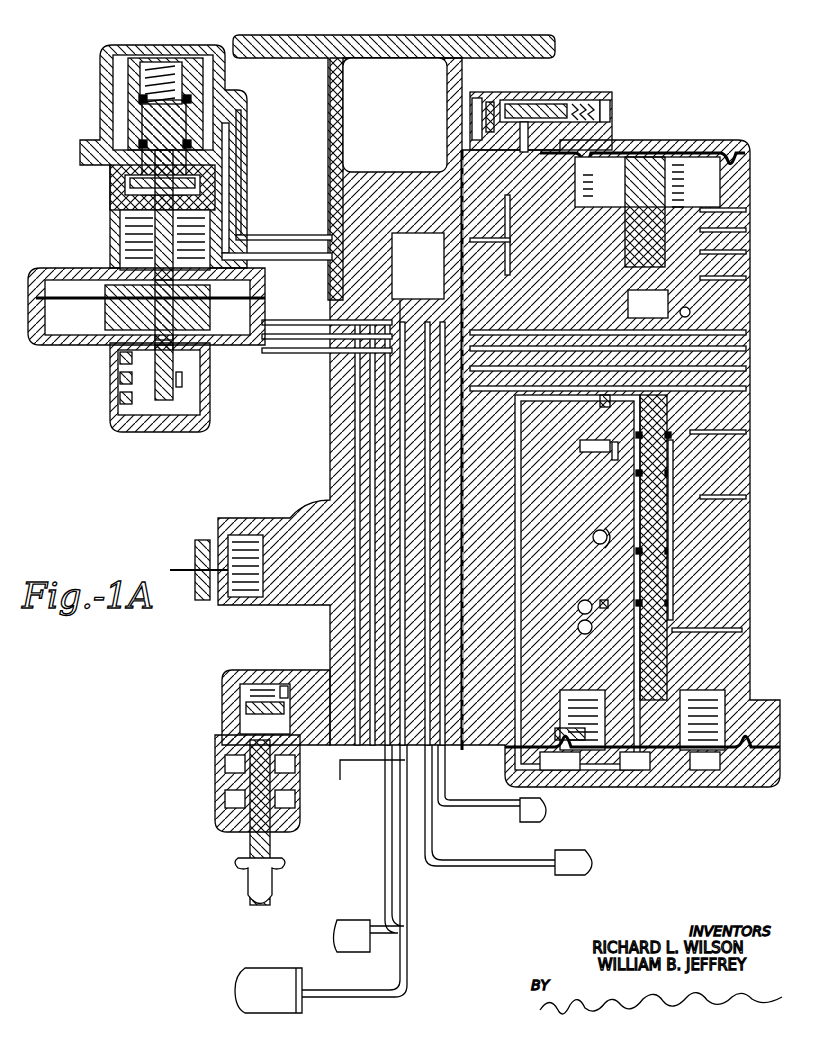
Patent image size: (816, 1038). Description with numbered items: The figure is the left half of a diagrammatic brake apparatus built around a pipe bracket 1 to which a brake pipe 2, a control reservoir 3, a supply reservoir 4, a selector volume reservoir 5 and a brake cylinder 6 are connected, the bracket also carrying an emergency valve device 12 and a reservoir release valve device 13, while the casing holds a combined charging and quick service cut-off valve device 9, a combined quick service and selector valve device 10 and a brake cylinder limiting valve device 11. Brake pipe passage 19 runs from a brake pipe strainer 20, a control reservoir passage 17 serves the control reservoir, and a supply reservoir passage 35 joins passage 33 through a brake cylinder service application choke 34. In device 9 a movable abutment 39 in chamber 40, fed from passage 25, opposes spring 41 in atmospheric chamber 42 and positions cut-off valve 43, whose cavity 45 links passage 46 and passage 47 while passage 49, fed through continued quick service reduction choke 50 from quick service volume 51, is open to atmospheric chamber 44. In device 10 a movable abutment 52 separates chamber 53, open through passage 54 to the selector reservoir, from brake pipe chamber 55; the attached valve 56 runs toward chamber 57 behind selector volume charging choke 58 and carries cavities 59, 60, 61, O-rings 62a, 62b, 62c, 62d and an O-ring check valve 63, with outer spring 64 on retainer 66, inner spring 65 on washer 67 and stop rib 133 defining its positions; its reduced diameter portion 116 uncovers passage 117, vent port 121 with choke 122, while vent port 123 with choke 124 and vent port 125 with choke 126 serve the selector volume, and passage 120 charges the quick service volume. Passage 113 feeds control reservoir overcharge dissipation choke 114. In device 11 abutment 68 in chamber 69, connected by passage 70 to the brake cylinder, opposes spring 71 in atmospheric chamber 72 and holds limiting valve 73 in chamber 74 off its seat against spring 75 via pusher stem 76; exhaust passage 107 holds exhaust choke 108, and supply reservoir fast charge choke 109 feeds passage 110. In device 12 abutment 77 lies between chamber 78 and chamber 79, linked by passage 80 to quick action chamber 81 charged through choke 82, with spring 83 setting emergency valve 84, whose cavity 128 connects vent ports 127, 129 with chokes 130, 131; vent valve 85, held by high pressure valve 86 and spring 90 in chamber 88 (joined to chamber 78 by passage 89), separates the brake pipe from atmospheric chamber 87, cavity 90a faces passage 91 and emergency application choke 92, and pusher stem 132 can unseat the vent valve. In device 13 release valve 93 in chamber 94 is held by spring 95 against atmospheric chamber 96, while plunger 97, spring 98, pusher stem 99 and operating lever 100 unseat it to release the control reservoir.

The pipe bracket 1 is at (330, 425).
The brake pipe 2 is at (192, 570).
The control reservoir 3 is at (570, 876).
The supply reservoir 4 is at (352, 922).
The selector volume reservoir 5 is at (528, 825).
The brake cylinder 6 is at (272, 968).
The combined charging and quick service cut-off valve device 9 is at (748, 150).
The combined quick service and selector valve device 10 is at (648, 778).
The brake cylinder limiting valve device 11 is at (598, 100).
The emergency valve device 12 is at (108, 45).
The reservoir release valve device 13 is at (222, 688).
The control reservoir passage 17 is at (758, 462).
The brake pipe passage 19 is at (400, 200).
The brake pipe strainer 20 is at (245, 537).
The passage 25 is at (746, 278).
The passage 33 is at (746, 368).
The brake cylinder service application choke 34 is at (466, 325).
The supply reservoir passage 35 is at (238, 195).
The movable abutment 39 is at (680, 165).
The chamber 40 is at (730, 150).
The helical bias spring 41 is at (632, 165).
The atmospheric chamber 42 is at (746, 188).
The charging and quick service cut-off valve 43 is at (632, 275).
The atmospheric chamber 44 is at (628, 308).
The elongated annular cavity 45 is at (628, 243).
The passage 46 is at (746, 230).
The passage 47 is at (746, 252).
The passage 49 is at (508, 300).
The continued quick service reduction choke 50 is at (470, 268).
The quick service volume 51 is at (418, 266).
The movable abutment 52 is at (680, 770).
The chamber 53 is at (735, 780).
The passage 54 is at (518, 548).
The chamber 55 is at (578, 711).
The combined quick service and selector valve 56 is at (668, 570).
The chamber 57 is at (665, 440).
The selector volume charging choke 58 is at (600, 402).
The elongated annular cavity 59 is at (668, 620).
The elongated annular cavity 60 is at (668, 590).
The elongated annular cavity 61 is at (668, 470).
The O-ring seal 62a is at (655, 440).
The O-ring seal 62b is at (636, 518).
The O-ring seal 62c is at (668, 562).
The O-ring seal 62d is at (740, 603).
The O-ring check valve 63 is at (668, 604).
The outer helical bias spring 64 is at (714, 711).
The inner helical bias spring 65 is at (620, 780).
The annular spring retainer 66 is at (715, 770).
The spring-retaining washer 67 is at (598, 708).
The movable abutment 68 is at (583, 100).
The chamber 69 is at (586, 104).
The brake cylinder passage 70 is at (385, 628).
The helical bias spring 71 is at (604, 104).
The atmospheric chamber 72 is at (590, 120).
The limiting valve 73 is at (525, 104).
The chamber 74 is at (492, 102).
The helical bias spring 75 is at (478, 98).
The pusher stem 76 is at (556, 104).
The movable abutment 77 is at (95, 310).
The chamber 78 is at (100, 270).
The chamber 79 is at (240, 315).
The passage 80 is at (215, 350).
The quick action chamber 81 is at (393, 60).
The quick action chamber charging choke 82 is at (45, 305).
The helical bias spring 83 is at (125, 220).
The emergency valve 84 is at (165, 415).
The brake pipe vent valve 85 is at (130, 196).
The high pressure valve 86 is at (140, 120).
The atmospheric chamber 87 is at (125, 165).
The chamber 88 is at (186, 70).
The passage 89 is at (226, 90).
The helical bias spring 90 is at (152, 68).
The elongated annular cavity 90a is at (140, 130).
The passage 91 is at (228, 125).
The brake cylinder emergency application choke 92 is at (412, 294).
The reservoir release valve 93 is at (246, 708).
The chamber 94 is at (250, 688).
The helical bias spring 95 is at (282, 686).
The atmospheric chamber 96 is at (232, 795).
The plunger 97 is at (235, 820).
The helical spring 98 is at (232, 760).
The pusher stem 99 is at (230, 745).
The operating lever 100 is at (252, 880).
The brake cylinder exhaust passage 107 is at (742, 432).
The brake cylinder exhaust choke 108 is at (462, 415).
The supply reservoir fast charge choke 109 is at (455, 190).
The passage 110 is at (755, 208).
The passage 113 is at (612, 462).
The control reservoir overcharge dissipation choke 114 is at (580, 445).
The reduced diameter portion 116 is at (711, 621).
The passage 117 is at (748, 668).
The passage 120 is at (742, 389).
The atmospheric vent port 121 is at (578, 642).
The continuous quick service choke 122 is at (565, 622).
The vent port 123 is at (589, 546).
The choke 124 is at (583, 532).
The vent port 125 is at (608, 604).
The choke 126 is at (590, 596).
The vent port 127 is at (128, 412).
The elongated annular cavity 128 is at (180, 405).
The vent port 129 is at (120, 382).
The choke 130 is at (120, 405).
The choke 131 is at (120, 362).
The pusher stem 132 is at (120, 240).
The annular stop rib 133 is at (590, 672).